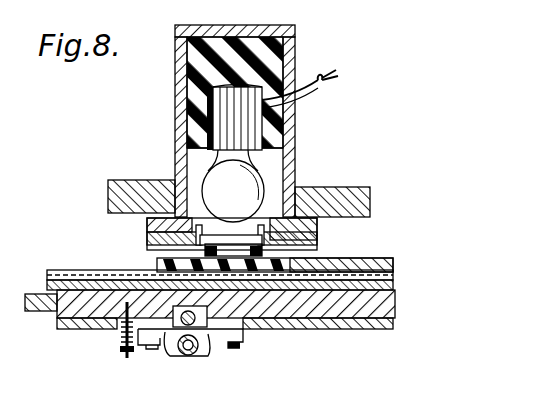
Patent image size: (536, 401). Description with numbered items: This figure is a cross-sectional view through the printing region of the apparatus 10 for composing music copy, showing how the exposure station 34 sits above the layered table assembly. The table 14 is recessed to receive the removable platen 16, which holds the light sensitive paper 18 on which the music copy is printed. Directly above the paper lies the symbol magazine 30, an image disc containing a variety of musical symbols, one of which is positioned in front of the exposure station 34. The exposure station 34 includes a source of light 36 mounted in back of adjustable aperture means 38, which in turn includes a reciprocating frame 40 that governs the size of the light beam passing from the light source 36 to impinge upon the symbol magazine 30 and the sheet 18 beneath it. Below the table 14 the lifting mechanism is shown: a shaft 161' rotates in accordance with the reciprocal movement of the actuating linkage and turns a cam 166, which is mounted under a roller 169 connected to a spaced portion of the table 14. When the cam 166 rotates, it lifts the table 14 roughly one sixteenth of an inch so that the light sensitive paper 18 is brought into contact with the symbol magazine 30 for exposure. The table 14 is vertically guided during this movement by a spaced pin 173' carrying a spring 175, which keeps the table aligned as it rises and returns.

The apparatus for composing music copy 10 is at (357, 331).
The table 14 is at (397, 300).
The removable platen 16 is at (395, 287).
The light sensitive paper 18 is at (110, 280).
The symbol magazine 30 is at (165, 266).
The exposure station 34 is at (104, 250).
The source of light 36 is at (248, 200).
The adjustable aperture means 38 is at (321, 240).
The reciprocating frame 40 is at (152, 233).
The shaft 161' is at (261, 375).
The cam 166 is at (176, 357).
The rollers 169 is at (246, 341).
The spaced pin 173' is at (106, 330).
The spring 175 is at (135, 355).